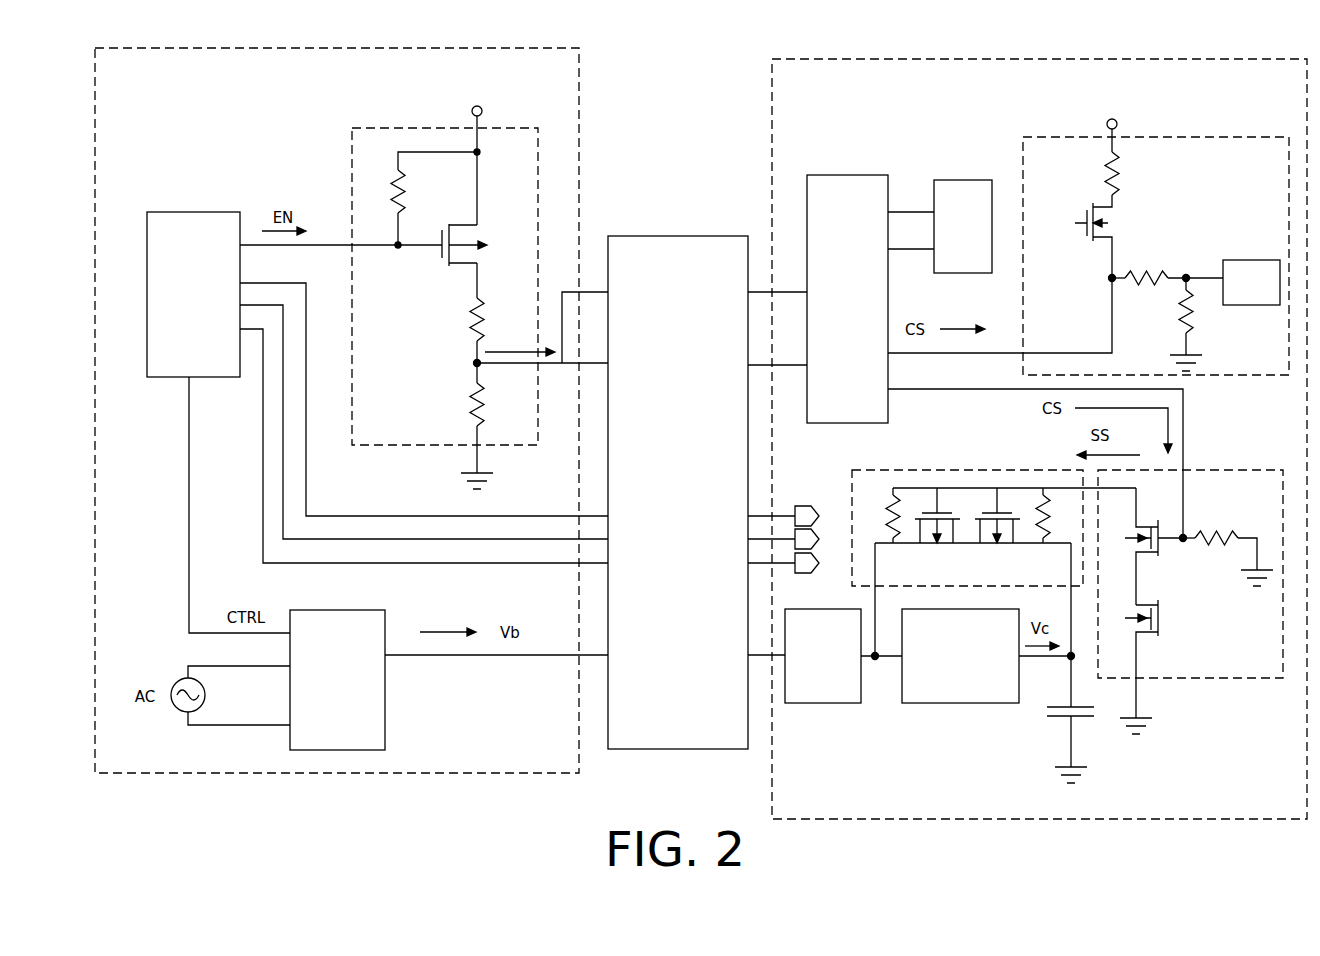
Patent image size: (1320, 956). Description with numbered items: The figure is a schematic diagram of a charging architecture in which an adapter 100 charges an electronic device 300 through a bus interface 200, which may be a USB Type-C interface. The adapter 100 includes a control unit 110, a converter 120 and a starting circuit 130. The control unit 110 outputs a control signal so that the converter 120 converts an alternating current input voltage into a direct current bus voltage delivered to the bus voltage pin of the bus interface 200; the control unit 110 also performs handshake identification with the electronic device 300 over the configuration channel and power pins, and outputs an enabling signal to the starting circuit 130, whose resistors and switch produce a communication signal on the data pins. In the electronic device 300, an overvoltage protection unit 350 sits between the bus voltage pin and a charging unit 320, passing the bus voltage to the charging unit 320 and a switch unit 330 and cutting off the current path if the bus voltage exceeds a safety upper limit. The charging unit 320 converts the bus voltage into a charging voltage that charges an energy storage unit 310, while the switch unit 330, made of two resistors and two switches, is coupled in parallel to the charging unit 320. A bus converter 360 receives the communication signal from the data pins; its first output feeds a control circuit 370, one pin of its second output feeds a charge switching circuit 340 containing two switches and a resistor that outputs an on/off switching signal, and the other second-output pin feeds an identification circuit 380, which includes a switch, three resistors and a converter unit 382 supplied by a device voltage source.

The adapter 100 is at (360, 47).
The control unit 110 is at (193, 294).
The converter 120 is at (337, 680).
The starting circuit 130 is at (380, 127).
The bus interface 200 is at (702, 236).
The electronic device 300 is at (1005, 58).
The energy storage unit 310 is at (1085, 726).
The charging unit 320 is at (960, 656).
The switch unit 330 is at (1009, 470).
The charge switching circuit 340 is at (1243, 470).
The overvoltage protection unit 350 is at (823, 656).
The bus converter 360 is at (854, 175).
The control circuit 370 is at (963, 226).
The identification circuit 380 is at (1209, 137).
The converter unit 382 is at (1251, 282).